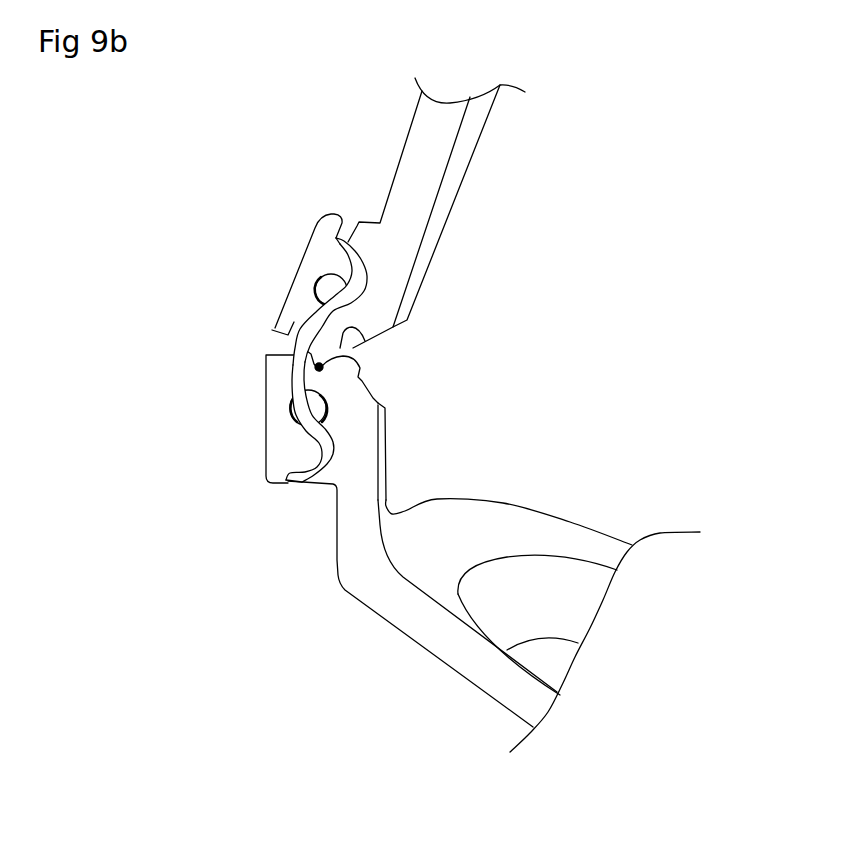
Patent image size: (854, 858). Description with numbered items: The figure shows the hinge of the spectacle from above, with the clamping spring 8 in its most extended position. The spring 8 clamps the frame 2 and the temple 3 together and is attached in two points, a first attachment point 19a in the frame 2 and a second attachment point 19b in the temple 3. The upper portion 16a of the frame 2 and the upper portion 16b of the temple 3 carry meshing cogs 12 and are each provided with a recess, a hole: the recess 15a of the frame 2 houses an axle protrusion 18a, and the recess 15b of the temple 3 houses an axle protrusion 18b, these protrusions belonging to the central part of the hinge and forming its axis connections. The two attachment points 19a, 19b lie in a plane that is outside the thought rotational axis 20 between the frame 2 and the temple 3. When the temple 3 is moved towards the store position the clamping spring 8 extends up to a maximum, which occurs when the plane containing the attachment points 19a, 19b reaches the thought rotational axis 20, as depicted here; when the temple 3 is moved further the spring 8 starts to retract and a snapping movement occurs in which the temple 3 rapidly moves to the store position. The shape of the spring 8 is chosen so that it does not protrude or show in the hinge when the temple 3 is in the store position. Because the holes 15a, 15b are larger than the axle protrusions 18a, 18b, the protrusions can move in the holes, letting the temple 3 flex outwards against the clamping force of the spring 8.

The frame 2 is at (400, 610).
The temple 3 is at (393, 253).
The clamping spring 8 is at (338, 305).
The meshing cogs 12 is at (326, 351).
The recess 15a is at (308, 421).
The recess 15b is at (330, 292).
The upper portion 16a is at (275, 369).
The upper portion 16b is at (287, 313).
The axle protrusion 18a is at (293, 408).
The axle protrusion 18b is at (313, 282).
The first attachment point 19a is at (288, 487).
The second attachment point 19b is at (349, 236).
The thought rotational axis 20 is at (322, 372).